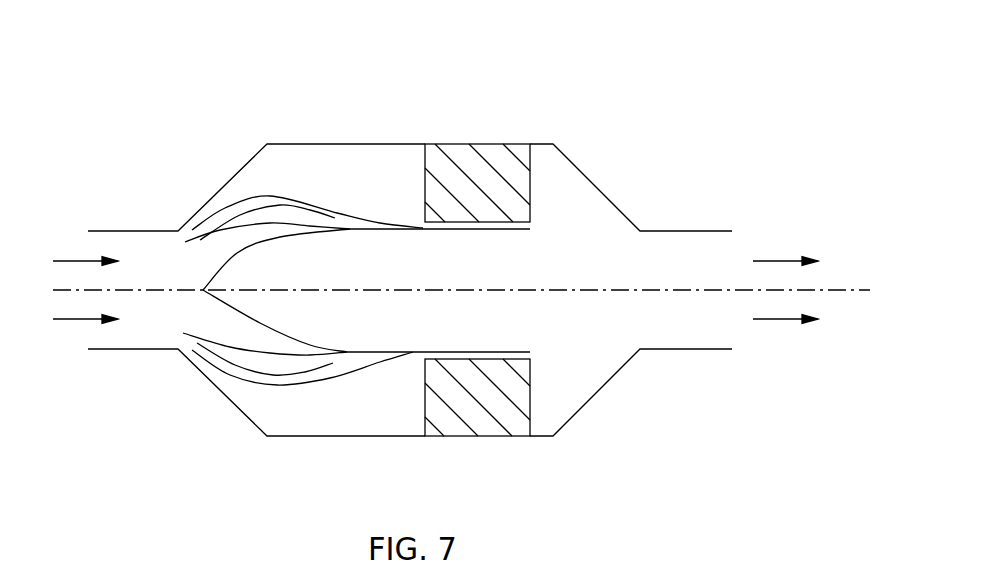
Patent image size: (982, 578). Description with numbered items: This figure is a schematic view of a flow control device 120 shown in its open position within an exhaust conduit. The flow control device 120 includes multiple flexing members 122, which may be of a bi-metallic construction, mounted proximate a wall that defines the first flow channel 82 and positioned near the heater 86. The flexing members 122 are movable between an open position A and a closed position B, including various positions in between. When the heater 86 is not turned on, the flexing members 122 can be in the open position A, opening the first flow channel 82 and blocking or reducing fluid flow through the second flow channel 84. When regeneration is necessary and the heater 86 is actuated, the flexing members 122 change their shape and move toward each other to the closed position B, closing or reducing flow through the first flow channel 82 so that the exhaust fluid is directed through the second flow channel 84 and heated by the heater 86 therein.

The flow control device 120 is at (225, 142).
The flexing members 122 is at (302, 193).
The first flow channel 82 is at (550, 318).
The second flow channel 84 is at (545, 197).
The heater 86 is at (482, 150).
The open position A is at (225, 203).
The closed position B is at (207, 272).